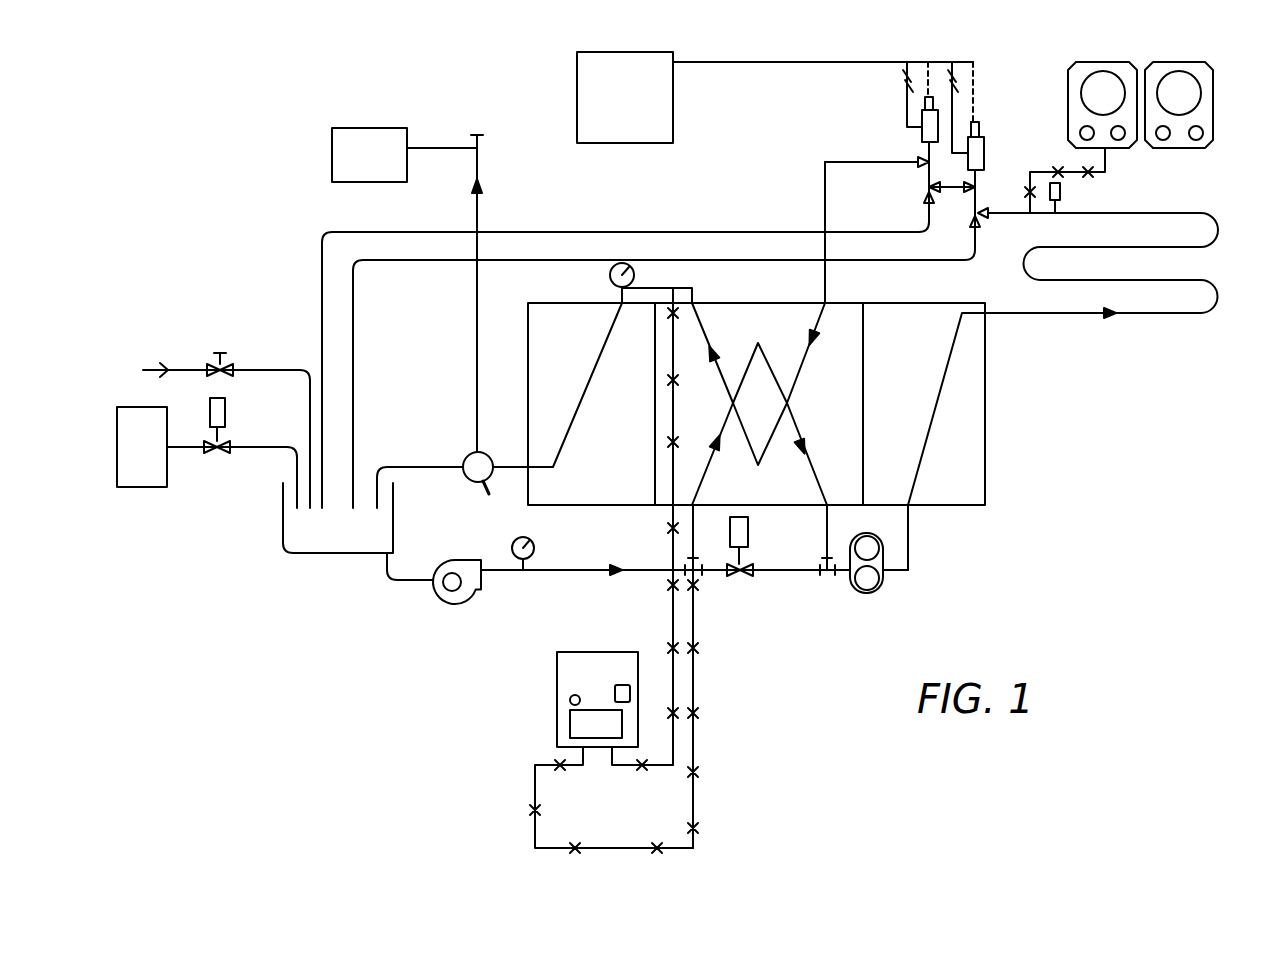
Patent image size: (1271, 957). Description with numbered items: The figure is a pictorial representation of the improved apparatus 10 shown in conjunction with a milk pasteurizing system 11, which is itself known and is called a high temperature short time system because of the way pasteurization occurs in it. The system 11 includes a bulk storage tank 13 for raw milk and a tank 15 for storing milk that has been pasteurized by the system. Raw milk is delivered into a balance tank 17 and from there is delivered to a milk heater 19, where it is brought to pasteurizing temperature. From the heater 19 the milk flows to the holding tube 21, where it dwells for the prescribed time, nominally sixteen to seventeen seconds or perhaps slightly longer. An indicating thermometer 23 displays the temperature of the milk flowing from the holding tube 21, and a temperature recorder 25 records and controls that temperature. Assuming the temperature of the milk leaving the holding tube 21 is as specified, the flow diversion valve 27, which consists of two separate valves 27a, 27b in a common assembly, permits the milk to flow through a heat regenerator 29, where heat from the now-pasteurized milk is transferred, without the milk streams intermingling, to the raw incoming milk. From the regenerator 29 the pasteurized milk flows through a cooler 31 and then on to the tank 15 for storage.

The improved apparatus 10 is at (675, 123).
The milk pasteurizing system 11 is at (518, 633).
The bulk storage tank 13 is at (170, 477).
The tank 15 is at (373, 182).
The balance tank 17 is at (323, 555).
The milk heater 19 is at (968, 402).
The holding tube 21 is at (1155, 313).
The indicating thermometer 23 is at (1062, 192).
The temperature recorder 25 is at (1068, 85).
The flow diversion valve 27 is at (692, 285).
The valve 27a is at (922, 135).
The valve 27b is at (983, 142).
The heat regenerator 29 is at (730, 313).
The cooler 31 is at (537, 298).